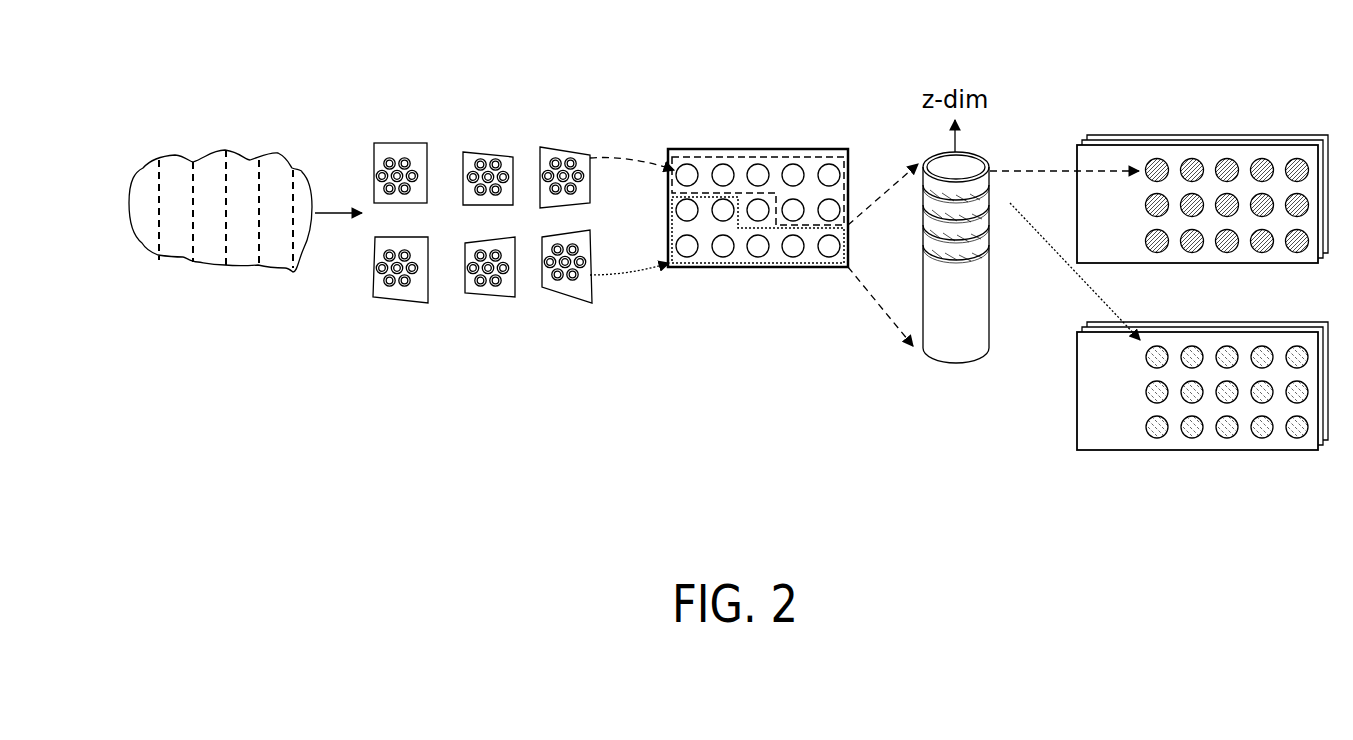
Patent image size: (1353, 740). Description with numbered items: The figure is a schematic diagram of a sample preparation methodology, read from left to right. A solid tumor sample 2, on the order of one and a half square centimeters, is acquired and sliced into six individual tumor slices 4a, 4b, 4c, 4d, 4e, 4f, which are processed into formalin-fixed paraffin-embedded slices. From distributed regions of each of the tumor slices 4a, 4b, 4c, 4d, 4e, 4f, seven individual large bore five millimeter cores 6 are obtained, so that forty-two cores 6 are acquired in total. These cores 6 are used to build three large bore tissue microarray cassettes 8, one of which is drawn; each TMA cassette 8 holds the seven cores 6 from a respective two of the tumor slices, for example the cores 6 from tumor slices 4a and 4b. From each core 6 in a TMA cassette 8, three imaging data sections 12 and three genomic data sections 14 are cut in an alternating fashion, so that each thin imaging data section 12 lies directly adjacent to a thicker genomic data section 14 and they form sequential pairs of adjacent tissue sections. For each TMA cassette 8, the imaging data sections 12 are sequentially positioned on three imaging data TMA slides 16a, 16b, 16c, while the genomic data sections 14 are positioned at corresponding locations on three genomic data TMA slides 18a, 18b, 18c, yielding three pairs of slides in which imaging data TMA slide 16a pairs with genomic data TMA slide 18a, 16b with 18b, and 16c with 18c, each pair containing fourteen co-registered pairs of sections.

The solid tumor sample 2 is at (295, 146).
The tumor slice 4a is at (150, 242).
The tumor slice 4b is at (182, 230).
The tumor slice 4c is at (219, 243).
The tumor slice 4d is at (248, 232).
The tumor slice 4e is at (283, 243).
The tumor slice 4f is at (302, 230).
The core 6 is at (793, 165).
The tissue microarray (TMA) cassette 8 is at (772, 264).
The imaging data section 12 is at (922, 222).
The genomic data section 14 is at (987, 242).
The imaging data TMA slide 16a is at (1132, 160).
The imaging data TMA slide 16b is at (1235, 142).
The imaging data TMA slide 16c is at (1317, 136).
The genomic data TMA slide 18a is at (1087, 392).
The genomic data TMA slide 18b is at (1255, 329).
The genomic data TMA slide 18c is at (1315, 324).